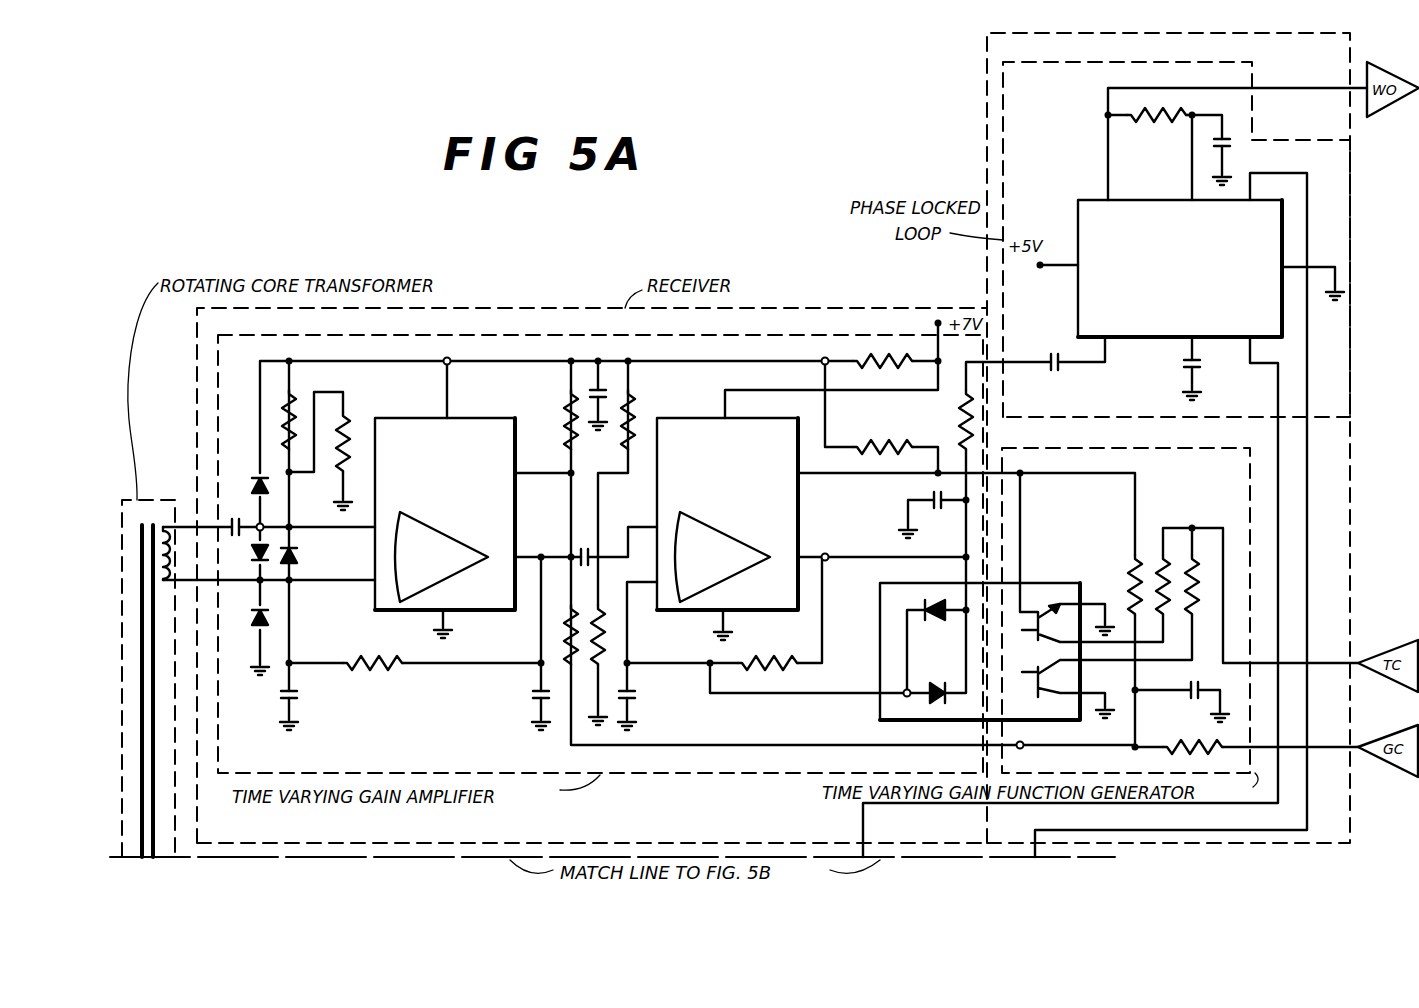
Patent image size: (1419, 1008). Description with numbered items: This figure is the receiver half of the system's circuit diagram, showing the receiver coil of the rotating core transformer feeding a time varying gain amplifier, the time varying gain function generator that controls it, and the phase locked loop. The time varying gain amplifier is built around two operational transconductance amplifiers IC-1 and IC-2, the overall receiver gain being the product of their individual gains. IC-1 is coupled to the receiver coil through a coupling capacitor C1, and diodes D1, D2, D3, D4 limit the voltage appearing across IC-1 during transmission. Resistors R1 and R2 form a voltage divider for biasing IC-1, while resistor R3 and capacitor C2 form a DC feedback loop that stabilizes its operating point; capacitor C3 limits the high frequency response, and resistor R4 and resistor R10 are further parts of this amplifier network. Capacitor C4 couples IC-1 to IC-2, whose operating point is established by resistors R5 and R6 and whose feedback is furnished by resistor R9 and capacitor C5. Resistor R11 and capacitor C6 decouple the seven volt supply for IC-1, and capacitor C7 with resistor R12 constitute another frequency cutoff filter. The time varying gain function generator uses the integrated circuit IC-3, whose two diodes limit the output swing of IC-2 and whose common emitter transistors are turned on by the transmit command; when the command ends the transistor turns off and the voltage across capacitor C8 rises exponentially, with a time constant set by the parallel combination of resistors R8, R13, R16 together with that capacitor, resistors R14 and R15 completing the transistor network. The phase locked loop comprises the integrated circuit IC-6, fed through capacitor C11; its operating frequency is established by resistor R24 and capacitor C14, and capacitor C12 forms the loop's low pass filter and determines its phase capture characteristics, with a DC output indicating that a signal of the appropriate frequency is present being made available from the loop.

The operational transconductance amplifier IC-1 is at (444, 504).
The operational transconductance amplifier IC-2 is at (727, 515).
The integrated circuit IC-3 is at (970, 654).
The phase lock loop integrated circuit IC-6 is at (1178, 269).
The resistor R1 is at (292, 398).
The resistor R2 is at (346, 416).
The resistor R3 is at (378, 670).
The resistor R4 is at (566, 414).
The resistor R5 is at (634, 400).
The resistor R6 is at (601, 606).
The resistor R8 is at (568, 612).
The resistor R9 is at (760, 660).
The resistor R10 is at (858, 444).
The resistor R11 is at (876, 366).
The resistor R12 is at (962, 428).
The resistor R13 is at (1131, 564).
The resistor R14 is at (1194, 610).
The resistor R15 is at (1160, 554).
The resistor R16 is at (1174, 748).
The resistor R24 is at (1142, 124).
The coupling capacitor C1 is at (240, 530).
The capacitor C2 is at (296, 698).
The capacitor C3 is at (534, 693).
The coupling capacitor C4 is at (582, 550).
The capacitor C5 is at (634, 698).
The capacitor C6 is at (604, 400).
The capacitor C7 is at (944, 505).
The capacitor C8 is at (1190, 698).
The capacitor C11 is at (1058, 370).
The capacitor C12 is at (1198, 366).
The capacitor C14 is at (1230, 146).
The diode D1 is at (252, 560).
The diode D2 is at (296, 560).
The diode D3 is at (253, 484).
The diode D4 is at (256, 626).